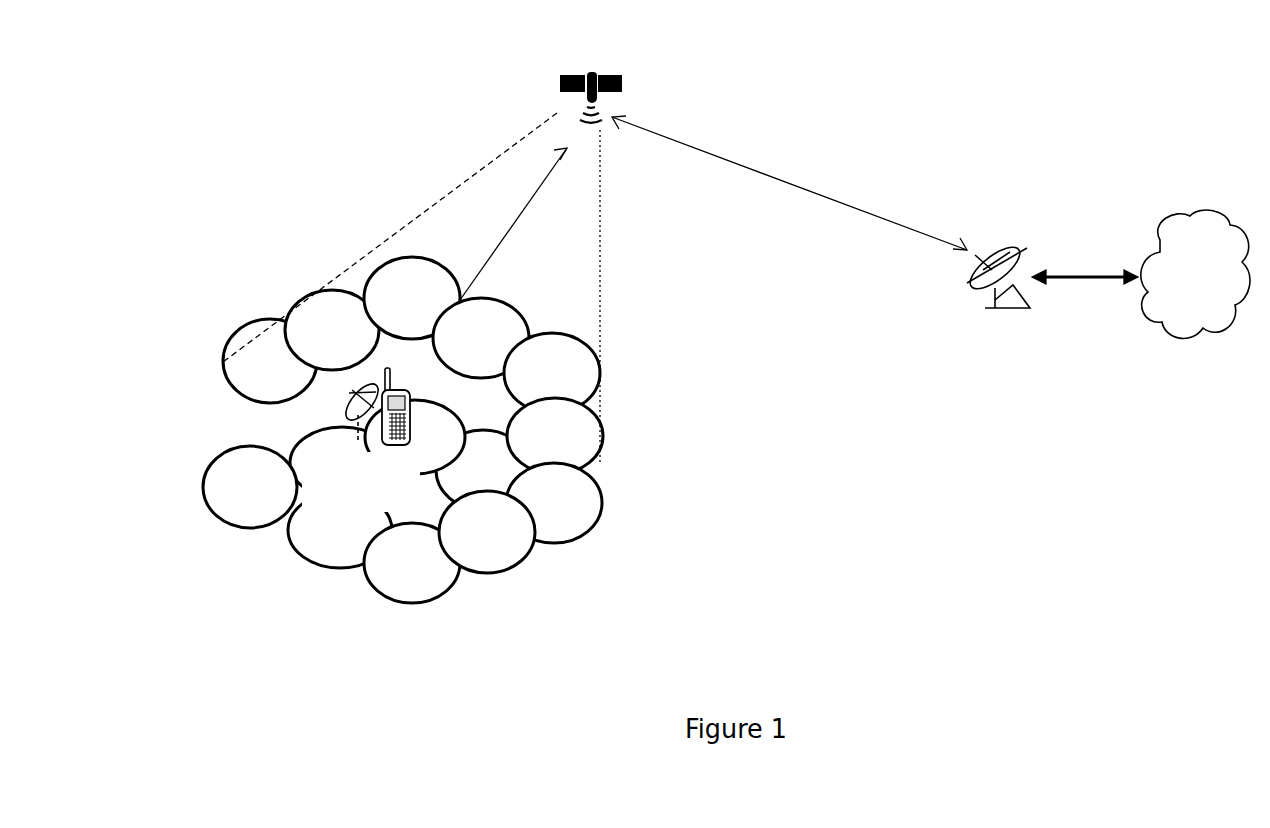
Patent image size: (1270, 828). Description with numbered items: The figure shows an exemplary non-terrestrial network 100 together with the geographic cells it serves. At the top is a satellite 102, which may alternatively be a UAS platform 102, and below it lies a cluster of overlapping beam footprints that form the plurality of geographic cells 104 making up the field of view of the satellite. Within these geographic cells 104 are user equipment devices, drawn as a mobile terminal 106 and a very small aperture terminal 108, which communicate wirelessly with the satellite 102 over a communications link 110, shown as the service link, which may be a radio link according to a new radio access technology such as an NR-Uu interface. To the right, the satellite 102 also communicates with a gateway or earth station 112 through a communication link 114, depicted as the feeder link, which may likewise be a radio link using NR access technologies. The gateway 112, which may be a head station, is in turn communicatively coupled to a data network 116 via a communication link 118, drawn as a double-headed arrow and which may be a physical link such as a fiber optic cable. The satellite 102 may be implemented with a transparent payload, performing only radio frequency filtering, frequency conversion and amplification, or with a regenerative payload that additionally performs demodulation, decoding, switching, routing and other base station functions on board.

The non-terrestrial network 100 is at (274, 101).
The satellite 102 is at (628, 88).
The geographic cells 104 is at (272, 343).
The mobile terminal 106 is at (428, 397).
The very small aperture terminal 108 is at (340, 395).
The communications link 110 is at (507, 232).
The gateway 112 is at (960, 283).
The communication link 114 is at (776, 172).
The data network 116 is at (1177, 225).
The communication link 118 is at (1083, 270).